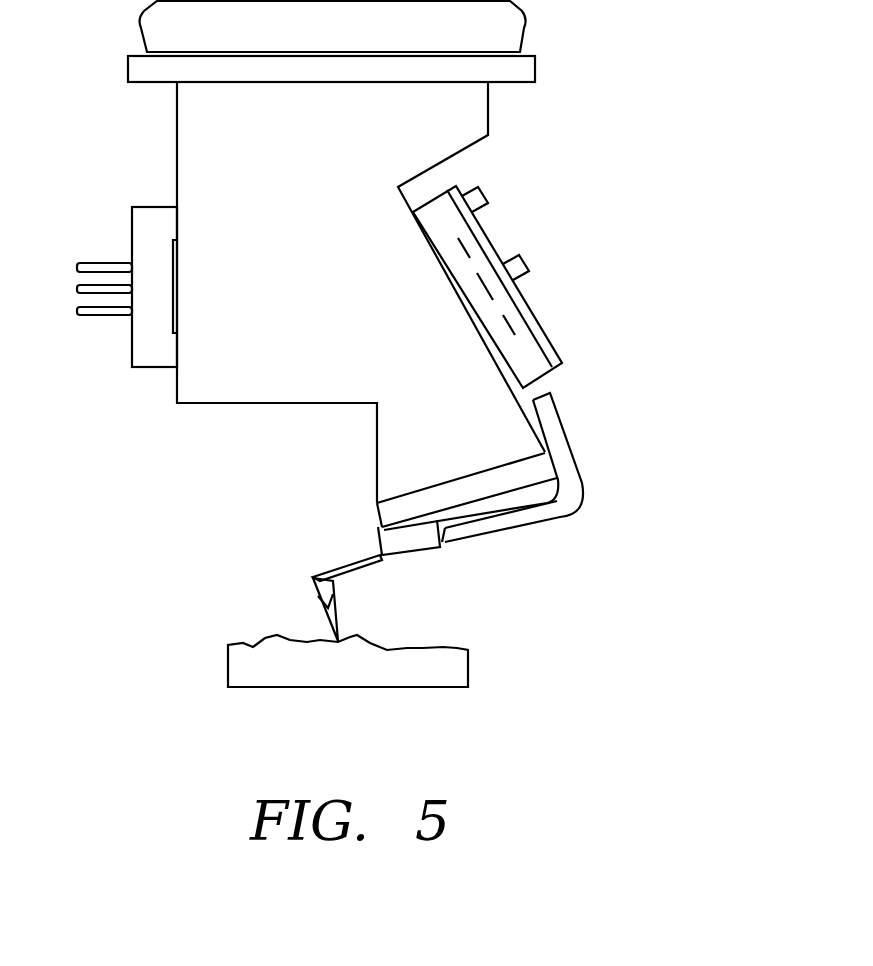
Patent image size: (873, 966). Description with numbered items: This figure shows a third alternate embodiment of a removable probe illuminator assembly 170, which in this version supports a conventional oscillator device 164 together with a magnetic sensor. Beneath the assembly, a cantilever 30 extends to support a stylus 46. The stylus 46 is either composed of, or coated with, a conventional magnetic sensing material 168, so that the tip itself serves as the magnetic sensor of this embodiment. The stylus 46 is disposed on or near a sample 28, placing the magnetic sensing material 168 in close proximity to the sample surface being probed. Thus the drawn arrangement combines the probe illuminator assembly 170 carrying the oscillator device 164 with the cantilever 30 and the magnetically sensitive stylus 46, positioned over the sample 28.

The probe illuminator assembly 170 is at (533, 163).
The oscillator device 164 is at (375, 514).
The stylus 46 is at (335, 583).
The cantilever 30 is at (340, 565).
The magnetic sensing material 168 is at (327, 623).
The sample 28 is at (473, 658).